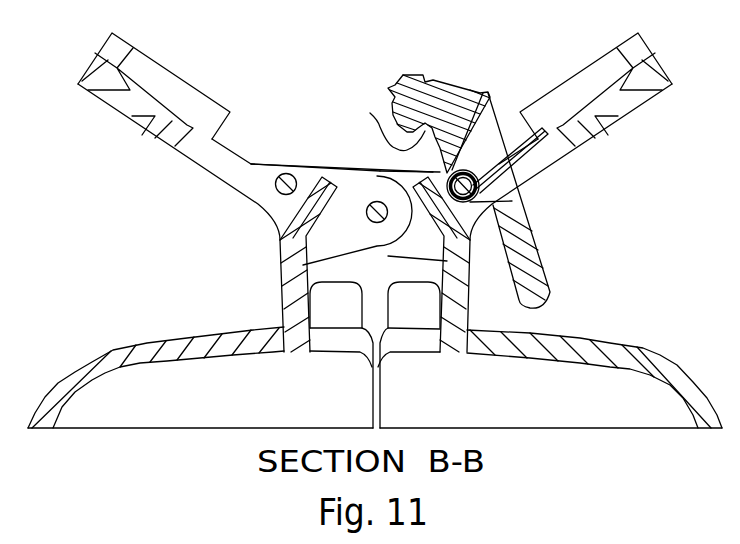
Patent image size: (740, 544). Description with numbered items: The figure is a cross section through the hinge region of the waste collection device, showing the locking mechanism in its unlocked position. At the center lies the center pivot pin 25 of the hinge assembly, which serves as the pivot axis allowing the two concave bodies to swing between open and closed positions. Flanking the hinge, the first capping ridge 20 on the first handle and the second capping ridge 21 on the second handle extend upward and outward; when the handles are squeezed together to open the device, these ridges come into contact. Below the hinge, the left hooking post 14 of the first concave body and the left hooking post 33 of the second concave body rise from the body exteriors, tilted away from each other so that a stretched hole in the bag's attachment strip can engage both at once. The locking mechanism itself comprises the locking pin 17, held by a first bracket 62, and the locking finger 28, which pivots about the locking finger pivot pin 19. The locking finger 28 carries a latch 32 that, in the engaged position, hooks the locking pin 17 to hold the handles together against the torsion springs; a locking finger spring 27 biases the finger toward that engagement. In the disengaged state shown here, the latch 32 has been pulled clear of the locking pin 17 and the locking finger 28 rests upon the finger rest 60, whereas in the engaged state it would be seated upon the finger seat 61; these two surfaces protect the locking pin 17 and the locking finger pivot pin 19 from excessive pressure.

The left hooking post 14 is at (412, 295).
The locking pin 17 is at (279, 178).
The locking finger pivot pin 19 is at (493, 207).
The first capping ridge 20 is at (638, 93).
The second capping ridge 21 is at (163, 53).
The center pivot pin 25 is at (362, 207).
The locking finger spring 27 is at (486, 140).
The locking finger 28 is at (433, 93).
The latch 32 is at (371, 114).
The left hooking post 33 is at (315, 302).
The finger rest 60 is at (433, 172).
The finger seat 61 is at (413, 190).
The first bracket 62 is at (352, 181).